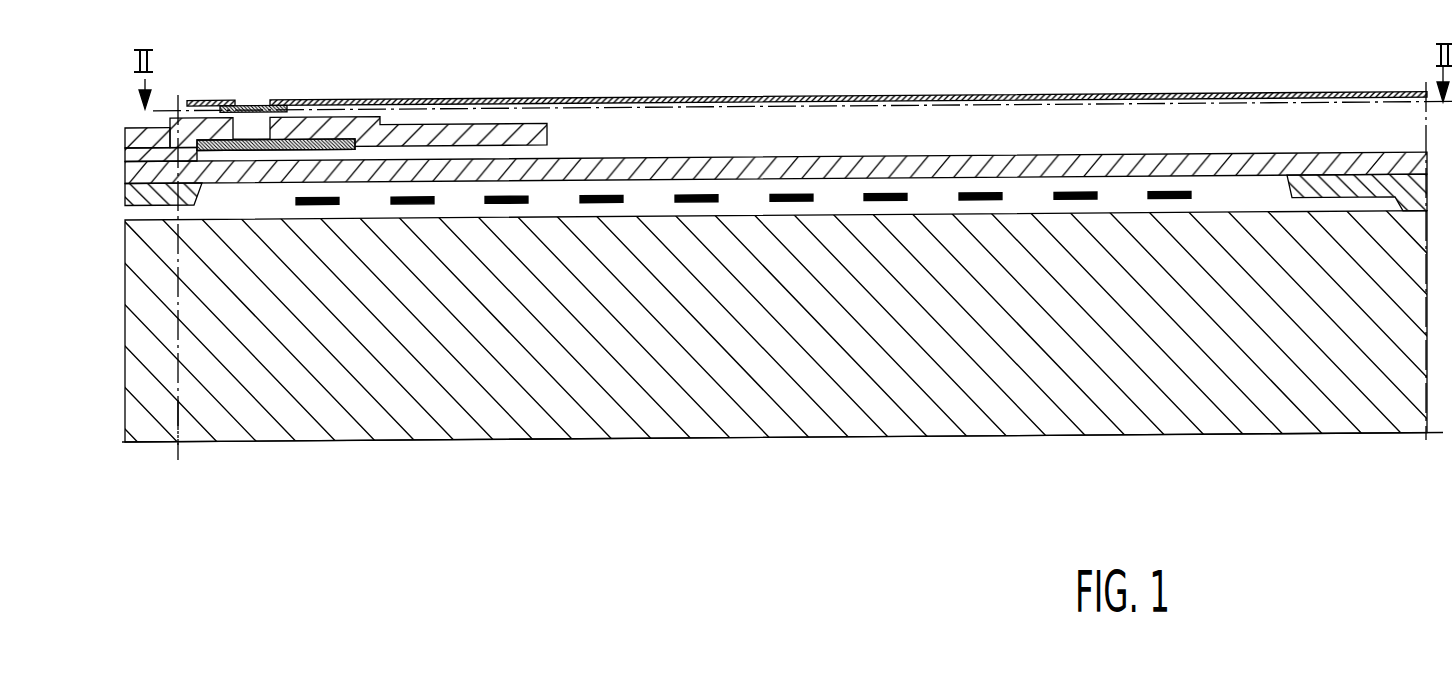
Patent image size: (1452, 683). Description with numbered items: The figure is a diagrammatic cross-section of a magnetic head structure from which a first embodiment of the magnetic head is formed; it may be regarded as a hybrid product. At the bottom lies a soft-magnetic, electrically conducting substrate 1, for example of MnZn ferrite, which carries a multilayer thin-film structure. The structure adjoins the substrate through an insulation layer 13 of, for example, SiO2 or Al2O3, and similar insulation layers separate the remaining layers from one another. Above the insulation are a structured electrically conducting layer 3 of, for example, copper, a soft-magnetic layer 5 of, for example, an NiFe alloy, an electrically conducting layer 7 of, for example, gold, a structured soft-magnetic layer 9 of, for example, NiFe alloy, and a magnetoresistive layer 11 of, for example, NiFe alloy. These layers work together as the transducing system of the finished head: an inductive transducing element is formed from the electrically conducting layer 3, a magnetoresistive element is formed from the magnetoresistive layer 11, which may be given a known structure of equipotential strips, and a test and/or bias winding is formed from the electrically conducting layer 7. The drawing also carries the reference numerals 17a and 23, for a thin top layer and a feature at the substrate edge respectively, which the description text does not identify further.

The substrate 1 is at (1283, 412).
The structured electrically conducting layer 3 is at (694, 196).
The soft-magnetic layer 5 is at (435, 165).
The electrically conducting layer 7 is at (340, 147).
The structured soft-magnetic layer 9 is at (222, 134).
The magnetoresistive layer 11 is at (245, 106).
The insulation layer 13 is at (173, 216).
The top electrode layer 17a is at (784, 97).
The substrate edge line 23 is at (177, 407).